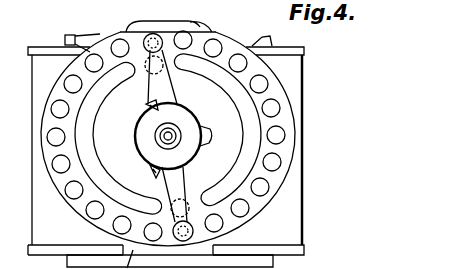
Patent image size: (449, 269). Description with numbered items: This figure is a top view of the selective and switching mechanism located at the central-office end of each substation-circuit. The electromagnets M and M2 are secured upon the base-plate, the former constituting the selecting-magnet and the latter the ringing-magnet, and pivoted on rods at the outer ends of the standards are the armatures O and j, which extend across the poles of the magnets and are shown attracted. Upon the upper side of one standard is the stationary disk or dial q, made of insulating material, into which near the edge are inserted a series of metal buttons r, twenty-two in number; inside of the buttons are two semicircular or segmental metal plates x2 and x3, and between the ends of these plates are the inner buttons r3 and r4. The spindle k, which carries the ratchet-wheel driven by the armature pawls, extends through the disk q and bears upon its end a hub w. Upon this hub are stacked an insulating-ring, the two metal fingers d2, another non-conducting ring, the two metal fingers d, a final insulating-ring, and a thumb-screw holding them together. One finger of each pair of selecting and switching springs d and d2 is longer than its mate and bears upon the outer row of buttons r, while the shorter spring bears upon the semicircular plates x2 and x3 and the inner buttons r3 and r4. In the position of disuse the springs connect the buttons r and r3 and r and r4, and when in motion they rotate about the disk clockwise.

The selecting-magnet M is at (63, 151).
The ringing-magnet M2 is at (276, 151).
The stationary disk or dial q is at (288, 96).
The armature O is at (82, 34).
The armature j is at (264, 33).
The semicircular or segmental plate x2 is at (118, 138).
The semicircular or segmental plate x3 is at (217, 130).
The spindle k is at (168, 141).
The hub w is at (204, 126).
The metal fingers d is at (172, 98).
The metal fingers d2 is at (183, 184).
The metal buttons r is at (164, 135).
The button r3 is at (160, 60).
The button r4 is at (186, 203).